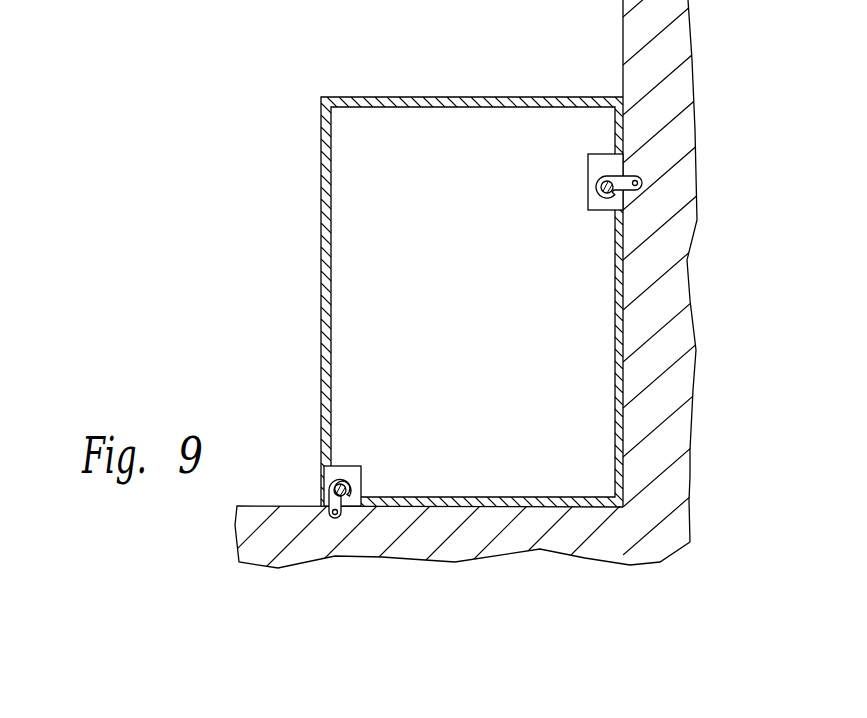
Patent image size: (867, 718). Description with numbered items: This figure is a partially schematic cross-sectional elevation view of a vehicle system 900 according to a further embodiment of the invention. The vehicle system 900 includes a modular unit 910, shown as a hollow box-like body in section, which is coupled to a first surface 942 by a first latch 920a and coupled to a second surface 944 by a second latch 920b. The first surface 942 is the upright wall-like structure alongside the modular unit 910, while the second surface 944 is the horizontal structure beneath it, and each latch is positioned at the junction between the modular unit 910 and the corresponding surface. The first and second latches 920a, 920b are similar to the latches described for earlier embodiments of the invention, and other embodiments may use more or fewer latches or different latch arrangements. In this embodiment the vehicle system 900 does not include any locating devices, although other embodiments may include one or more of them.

The vehicle system 900 is at (432, 265).
The modular unit 910 is at (455, 137).
The first latch 920a is at (595, 223).
The second latch 920b is at (363, 453).
The first surface 942 is at (625, 305).
The second surface 944 is at (432, 503).